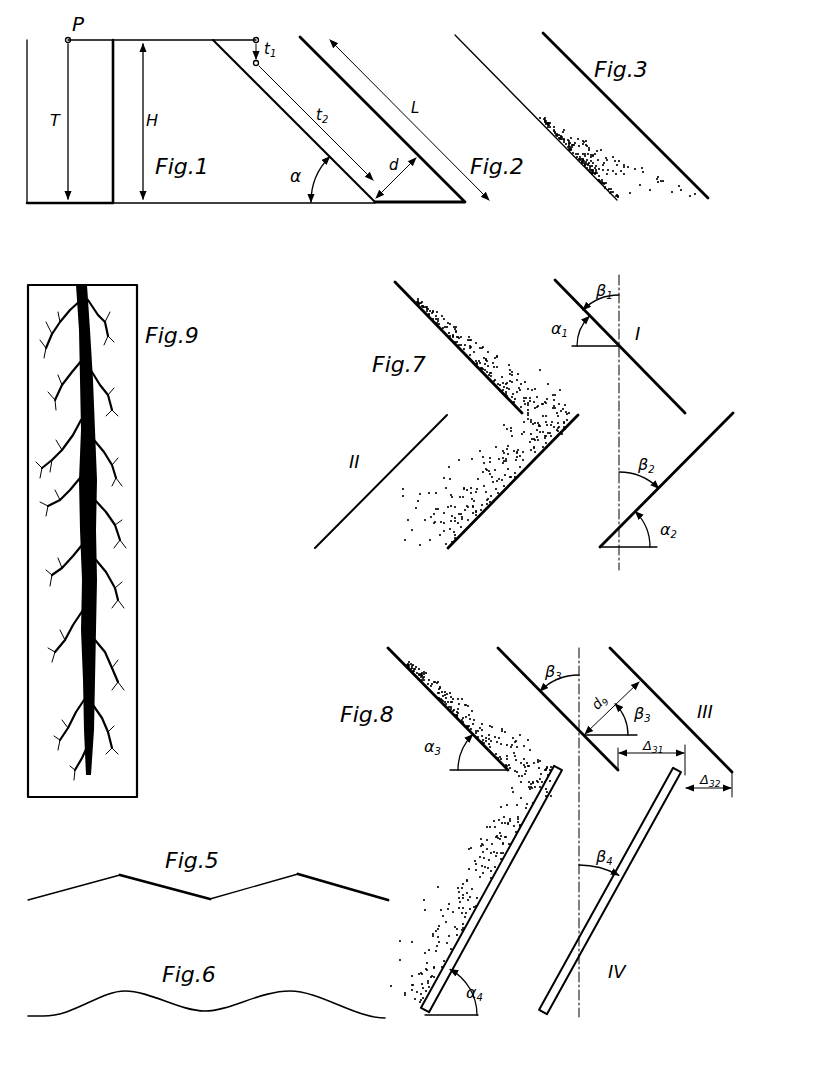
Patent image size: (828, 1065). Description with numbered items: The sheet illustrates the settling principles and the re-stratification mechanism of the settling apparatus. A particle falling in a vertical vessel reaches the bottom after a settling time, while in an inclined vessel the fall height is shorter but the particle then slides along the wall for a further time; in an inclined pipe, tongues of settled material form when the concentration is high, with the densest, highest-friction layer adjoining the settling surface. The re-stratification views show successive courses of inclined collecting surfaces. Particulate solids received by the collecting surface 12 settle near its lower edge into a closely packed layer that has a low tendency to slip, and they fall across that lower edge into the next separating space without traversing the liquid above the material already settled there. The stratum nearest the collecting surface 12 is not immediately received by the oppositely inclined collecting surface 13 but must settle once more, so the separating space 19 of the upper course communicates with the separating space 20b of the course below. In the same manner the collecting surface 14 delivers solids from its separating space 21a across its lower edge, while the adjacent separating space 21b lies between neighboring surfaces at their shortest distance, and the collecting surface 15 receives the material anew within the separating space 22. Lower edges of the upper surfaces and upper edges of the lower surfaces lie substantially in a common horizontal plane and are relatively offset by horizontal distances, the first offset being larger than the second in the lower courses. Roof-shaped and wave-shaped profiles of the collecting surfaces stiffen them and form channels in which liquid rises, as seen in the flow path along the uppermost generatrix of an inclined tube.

In FIG. 7, the collecting surface 12 is at (428, 316).
In FIG. 7, the collecting surface 13 is at (355, 505).
In FIG. 8, the collecting surface 14 is at (400, 660).
In FIG. 8, the collecting surface 15 is at (500, 893).
In FIG. 7, the separating space 19 is at (491, 353).
In FIG. 7, the separating space 20b is at (486, 470).
In FIG. 8, the separating space 21a is at (476, 716).
In FIG. 8, the separating space 21b is at (602, 688).
In FIG. 8, the separating space 22 is at (471, 880).